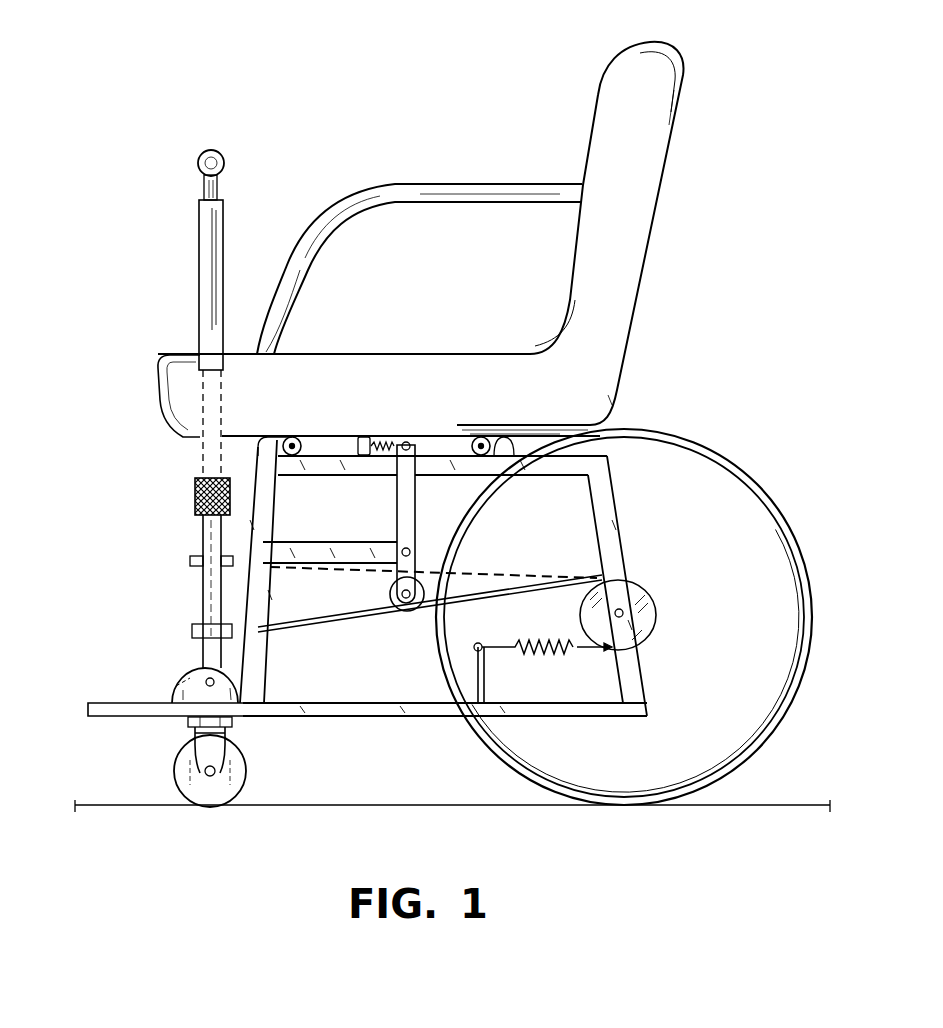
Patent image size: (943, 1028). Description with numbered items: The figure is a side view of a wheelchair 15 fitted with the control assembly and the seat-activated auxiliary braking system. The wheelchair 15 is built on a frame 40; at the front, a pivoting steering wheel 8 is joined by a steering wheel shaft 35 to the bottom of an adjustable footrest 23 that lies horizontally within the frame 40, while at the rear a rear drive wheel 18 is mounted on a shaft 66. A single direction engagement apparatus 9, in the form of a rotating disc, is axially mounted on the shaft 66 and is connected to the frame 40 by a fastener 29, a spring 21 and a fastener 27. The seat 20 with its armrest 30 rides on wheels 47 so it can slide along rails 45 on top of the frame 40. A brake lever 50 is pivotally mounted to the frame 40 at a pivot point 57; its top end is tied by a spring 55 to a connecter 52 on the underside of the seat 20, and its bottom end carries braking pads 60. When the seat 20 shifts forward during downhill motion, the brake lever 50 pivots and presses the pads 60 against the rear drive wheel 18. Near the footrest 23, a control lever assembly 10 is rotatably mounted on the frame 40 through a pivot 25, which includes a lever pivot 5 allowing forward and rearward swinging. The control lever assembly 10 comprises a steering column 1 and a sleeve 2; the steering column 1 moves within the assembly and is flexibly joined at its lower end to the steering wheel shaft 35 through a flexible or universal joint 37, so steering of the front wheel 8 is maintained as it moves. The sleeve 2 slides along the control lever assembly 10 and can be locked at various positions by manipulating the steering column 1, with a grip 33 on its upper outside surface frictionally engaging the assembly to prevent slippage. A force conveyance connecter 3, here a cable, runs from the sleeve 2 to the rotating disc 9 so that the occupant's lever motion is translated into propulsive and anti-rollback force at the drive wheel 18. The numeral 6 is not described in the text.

The wheelchair 15 is at (722, 41).
The control lever assembly 10 is at (160, 234).
The steering column 1 is at (217, 192).
The housing cylinder 6 is at (205, 292).
The sleeve 2 is at (200, 440).
The grip 33 is at (196, 496).
The lever pivot 5 is at (238, 676).
The flexible or universal joint 37 is at (170, 681).
The footrest 23 is at (90, 711).
The steering wheel shaft 35 is at (190, 720).
The pivot 25 is at (236, 720).
The steering wheel 8 is at (184, 778).
The force conveyance connecter 3 is at (545, 572).
The frame 40 is at (262, 513).
The rails 45 is at (275, 436).
The connecter 52 is at (363, 436).
The spring 55 is at (383, 436).
The wheels 47 is at (481, 436).
The brake lever 50 is at (398, 500).
The pivot point 57 is at (402, 548).
The braking pads 60 is at (393, 590).
The fastener 27 is at (476, 666).
The spring 21 is at (536, 652).
The fastener 29 is at (580, 643).
The single direction engagement apparatus 9 is at (636, 586).
The shaft 66 is at (641, 612).
The rear drive wheel 18 is at (706, 447).
The armrest 30 is at (502, 183).
The seat 20 is at (597, 248).